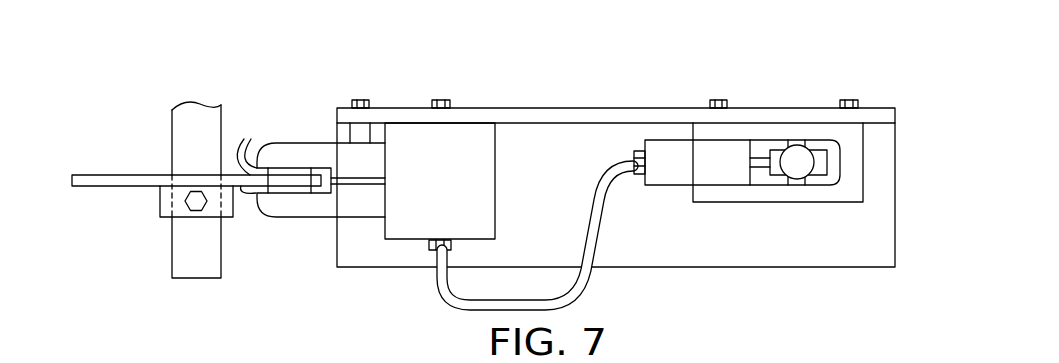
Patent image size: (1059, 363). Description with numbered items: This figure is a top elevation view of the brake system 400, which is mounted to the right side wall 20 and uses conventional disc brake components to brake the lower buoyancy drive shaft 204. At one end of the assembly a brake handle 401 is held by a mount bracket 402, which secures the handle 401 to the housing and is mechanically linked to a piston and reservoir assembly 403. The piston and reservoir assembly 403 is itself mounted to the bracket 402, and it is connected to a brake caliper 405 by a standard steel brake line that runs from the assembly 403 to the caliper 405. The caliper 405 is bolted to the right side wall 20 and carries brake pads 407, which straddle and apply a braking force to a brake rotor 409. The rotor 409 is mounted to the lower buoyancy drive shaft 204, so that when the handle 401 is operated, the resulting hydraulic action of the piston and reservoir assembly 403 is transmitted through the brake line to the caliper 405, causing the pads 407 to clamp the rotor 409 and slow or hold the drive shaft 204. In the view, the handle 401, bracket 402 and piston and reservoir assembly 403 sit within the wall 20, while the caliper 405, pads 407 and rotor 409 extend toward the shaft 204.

The brake system 400 is at (565, 165).
The right side wall 20 is at (643, 108).
The lower buoyancy drive shaft 204 is at (193, 260).
The brake rotor 409 is at (139, 175).
The brake pads 407 is at (310, 166).
The brake caliper 405 is at (495, 220).
The piston and reservoir assembly 403 is at (668, 186).
The mount bracket 402 is at (757, 203).
The brake handle 401 is at (795, 170).